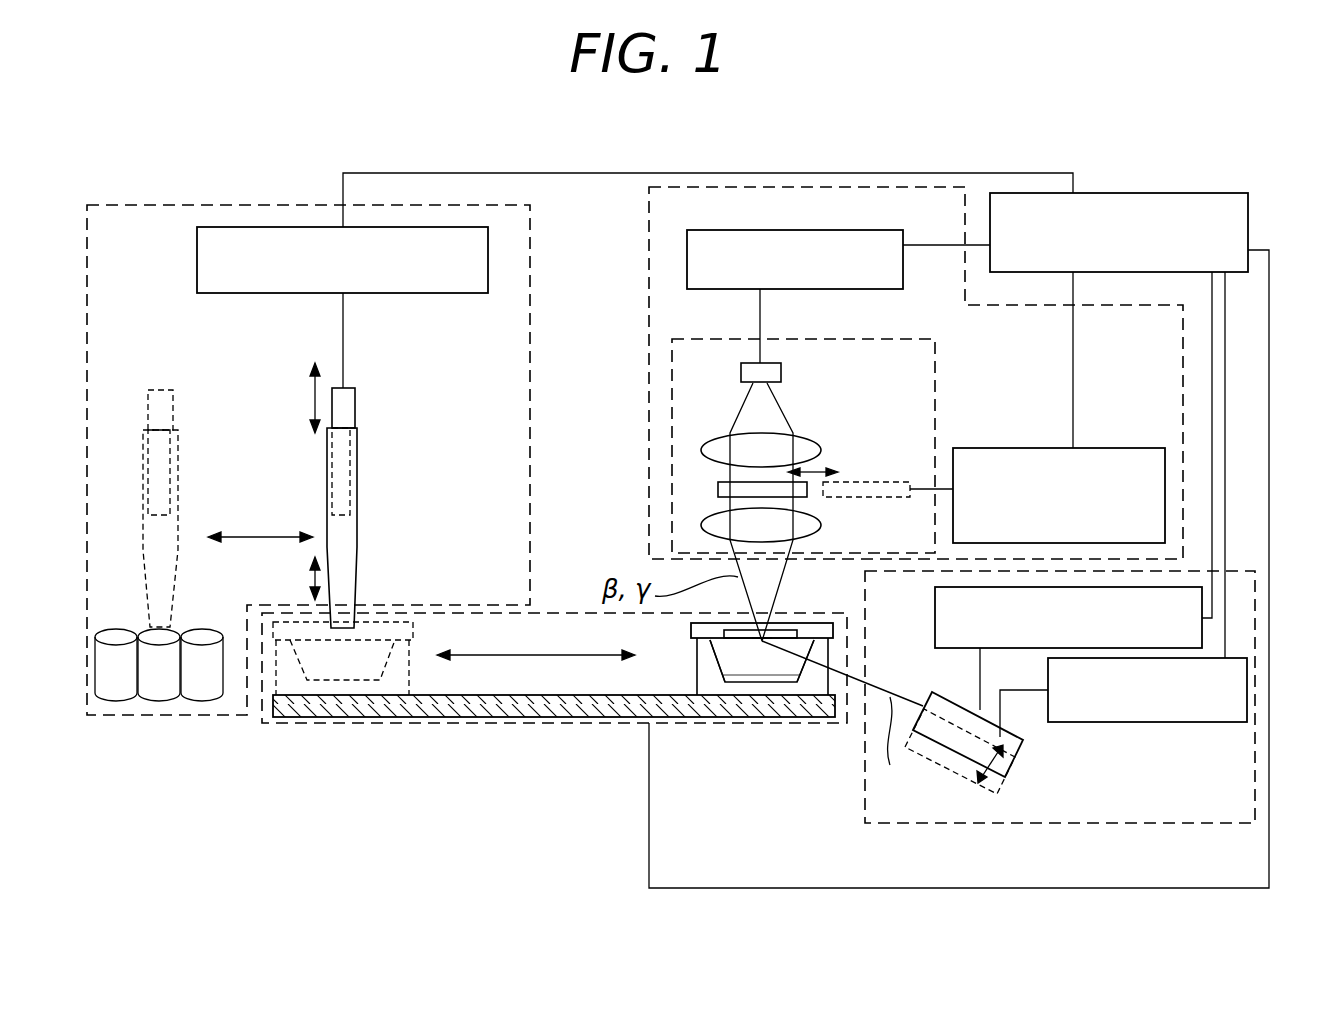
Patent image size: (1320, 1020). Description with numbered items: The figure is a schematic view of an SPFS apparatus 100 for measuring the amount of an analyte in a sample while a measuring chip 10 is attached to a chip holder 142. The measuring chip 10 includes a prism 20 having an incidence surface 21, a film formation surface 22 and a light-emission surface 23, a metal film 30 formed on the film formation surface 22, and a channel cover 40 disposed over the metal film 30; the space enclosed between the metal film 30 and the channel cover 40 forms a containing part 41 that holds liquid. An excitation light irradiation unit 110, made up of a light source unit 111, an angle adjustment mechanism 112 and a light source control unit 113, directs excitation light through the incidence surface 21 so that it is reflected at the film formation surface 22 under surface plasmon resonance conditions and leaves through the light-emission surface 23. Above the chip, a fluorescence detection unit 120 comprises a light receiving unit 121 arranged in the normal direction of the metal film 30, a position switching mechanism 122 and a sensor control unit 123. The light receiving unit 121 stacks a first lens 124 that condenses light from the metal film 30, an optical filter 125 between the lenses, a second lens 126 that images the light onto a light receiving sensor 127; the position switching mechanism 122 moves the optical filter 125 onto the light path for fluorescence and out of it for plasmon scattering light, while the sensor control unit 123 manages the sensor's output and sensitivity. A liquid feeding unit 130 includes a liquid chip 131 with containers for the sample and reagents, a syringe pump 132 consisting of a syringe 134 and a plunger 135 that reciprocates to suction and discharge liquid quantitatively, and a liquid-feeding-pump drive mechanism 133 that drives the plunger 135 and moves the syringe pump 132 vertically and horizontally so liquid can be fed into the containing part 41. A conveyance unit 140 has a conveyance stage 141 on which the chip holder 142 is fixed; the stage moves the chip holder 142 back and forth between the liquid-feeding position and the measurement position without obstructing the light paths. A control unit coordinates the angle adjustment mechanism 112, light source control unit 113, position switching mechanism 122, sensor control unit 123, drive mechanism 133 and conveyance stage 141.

The SPFS apparatus 100 is at (1266, 163).
The excitation light irradiation unit 110 is at (1048, 825).
The light source unit 111 is at (948, 748).
The angle adjustment mechanism 112 is at (935, 611).
The light source control unit 113 is at (1115, 722).
The fluorescence detection unit 120 is at (933, 186).
The light receiving unit 121 is at (672, 339).
The position switching mechanism 122 is at (1124, 448).
The sensor control unit 123 is at (733, 230).
The first lens 124 is at (703, 525).
The optical filter 125 is at (718, 489).
The second lens 126 is at (703, 448).
The light receiving sensor 127 is at (741, 372).
The liquid feeding unit 130 is at (176, 205).
The liquid chip 131 is at (130, 628).
The syringe pump 132 is at (326, 460).
The liquid-feeding-pump drive mechanism 133 is at (449, 294).
The syringe 134 is at (352, 590).
The plunger 135 is at (350, 487).
The conveyance unit 140 is at (582, 610).
The conveyance stage 141 is at (503, 695).
The chip holder 142 is at (695, 645).
The measuring chip 10 is at (746, 714).
The prism 20 is at (772, 720).
The incidence surface 21 is at (814, 701).
The film formation surface 22 is at (745, 650).
The light-emission surface 23 is at (718, 665).
The metal film 30 is at (762, 641).
The channel cover 40 is at (697, 643).
The containing part 41 is at (783, 634).